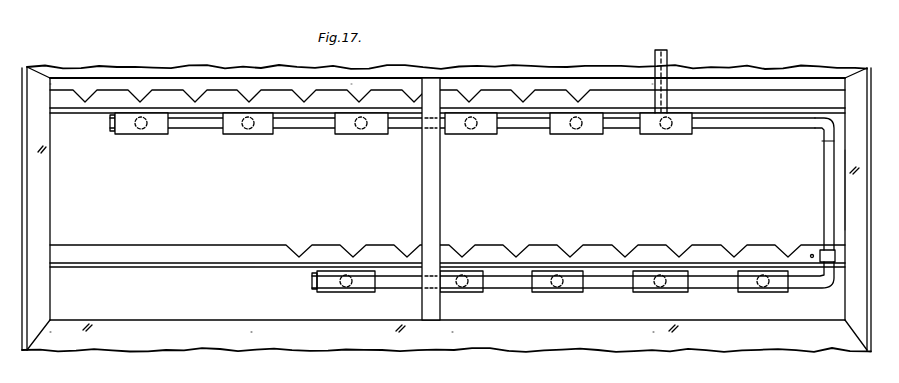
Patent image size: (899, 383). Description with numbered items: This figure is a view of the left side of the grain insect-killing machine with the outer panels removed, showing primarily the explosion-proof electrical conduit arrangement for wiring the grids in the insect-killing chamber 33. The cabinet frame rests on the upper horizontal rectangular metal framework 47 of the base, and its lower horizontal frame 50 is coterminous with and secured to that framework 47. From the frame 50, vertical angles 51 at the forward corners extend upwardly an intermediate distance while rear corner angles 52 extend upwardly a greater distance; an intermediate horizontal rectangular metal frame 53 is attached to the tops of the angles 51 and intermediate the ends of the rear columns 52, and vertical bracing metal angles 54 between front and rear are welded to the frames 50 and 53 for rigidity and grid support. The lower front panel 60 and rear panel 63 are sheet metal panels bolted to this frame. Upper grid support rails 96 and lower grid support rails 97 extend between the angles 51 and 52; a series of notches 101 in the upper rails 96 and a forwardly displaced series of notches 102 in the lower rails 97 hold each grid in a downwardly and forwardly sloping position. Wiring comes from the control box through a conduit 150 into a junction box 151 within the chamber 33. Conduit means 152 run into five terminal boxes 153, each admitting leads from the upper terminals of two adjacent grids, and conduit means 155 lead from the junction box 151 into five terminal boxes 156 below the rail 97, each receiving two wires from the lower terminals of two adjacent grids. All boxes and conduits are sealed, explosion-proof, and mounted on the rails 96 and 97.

The insect-killing chamber 33 is at (638, 214).
The upper horizontal rectangular metal framework 47 is at (303, 352).
The lower horizontal frame 50 is at (121, 345).
The vertical angles 51 is at (848, 185).
The rear corner angles 52 is at (43, 207).
The intermediate horizontal rectangular metal frame 53 is at (135, 63).
The vertical bracing metal angles 54 is at (432, 216).
The lower front panel 60 is at (872, 70).
The rear panel 63 is at (21, 77).
The upper grid support rails 96 is at (99, 103).
The lower grid support rails 97 is at (140, 266).
The notches 101 is at (78, 90).
The notches 102 is at (286, 245).
The conduit 150 is at (668, 58).
The junction box 151 is at (672, 135).
The conduit means 152 is at (197, 129).
The terminal boxes 153 is at (161, 135).
The conduit means 155 is at (410, 289).
The terminal boxes 156 is at (826, 208).